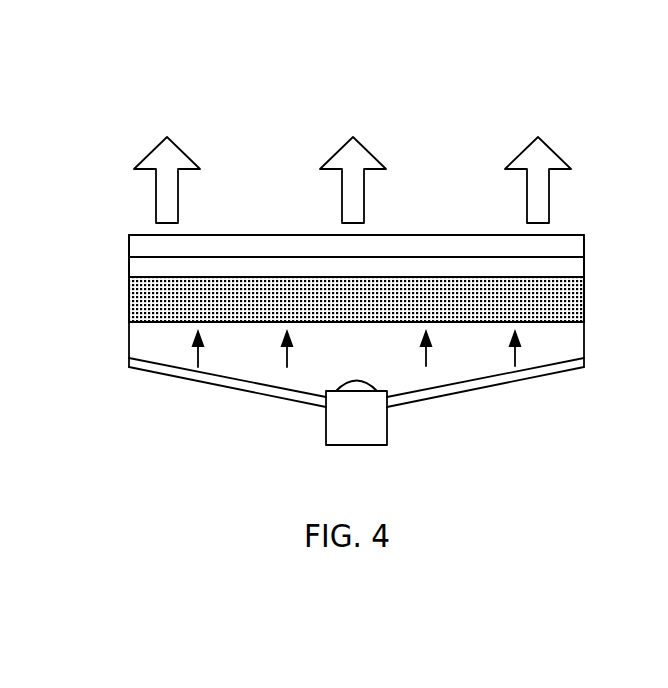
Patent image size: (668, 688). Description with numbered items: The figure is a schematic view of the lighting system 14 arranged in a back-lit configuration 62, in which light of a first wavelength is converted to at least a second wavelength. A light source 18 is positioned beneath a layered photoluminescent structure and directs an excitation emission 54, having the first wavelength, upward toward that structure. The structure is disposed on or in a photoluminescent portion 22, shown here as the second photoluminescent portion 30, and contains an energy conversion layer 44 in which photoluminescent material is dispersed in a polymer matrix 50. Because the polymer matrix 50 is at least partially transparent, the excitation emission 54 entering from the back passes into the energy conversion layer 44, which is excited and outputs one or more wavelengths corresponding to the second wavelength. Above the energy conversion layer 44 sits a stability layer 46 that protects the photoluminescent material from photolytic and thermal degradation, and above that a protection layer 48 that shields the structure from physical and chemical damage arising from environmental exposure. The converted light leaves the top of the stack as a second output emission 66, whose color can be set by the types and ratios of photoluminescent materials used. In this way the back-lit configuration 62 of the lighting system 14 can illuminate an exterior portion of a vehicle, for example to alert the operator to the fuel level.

The back-lit configuration 62 is at (500, 90).
The lighting system 14 is at (500, 90).
The photoluminescent portion 22 is at (590, 294).
The second photoluminescent portion 30 is at (590, 294).
The protection layer 48 is at (135, 244).
The stability layer 46 is at (137, 265).
The energy conversion layer 44 is at (135, 303).
The polymer matrix 50 is at (140, 314).
The light source 18 is at (369, 427).
The excitation emission 54 is at (196, 358).
The second output emission 66 is at (162, 198).